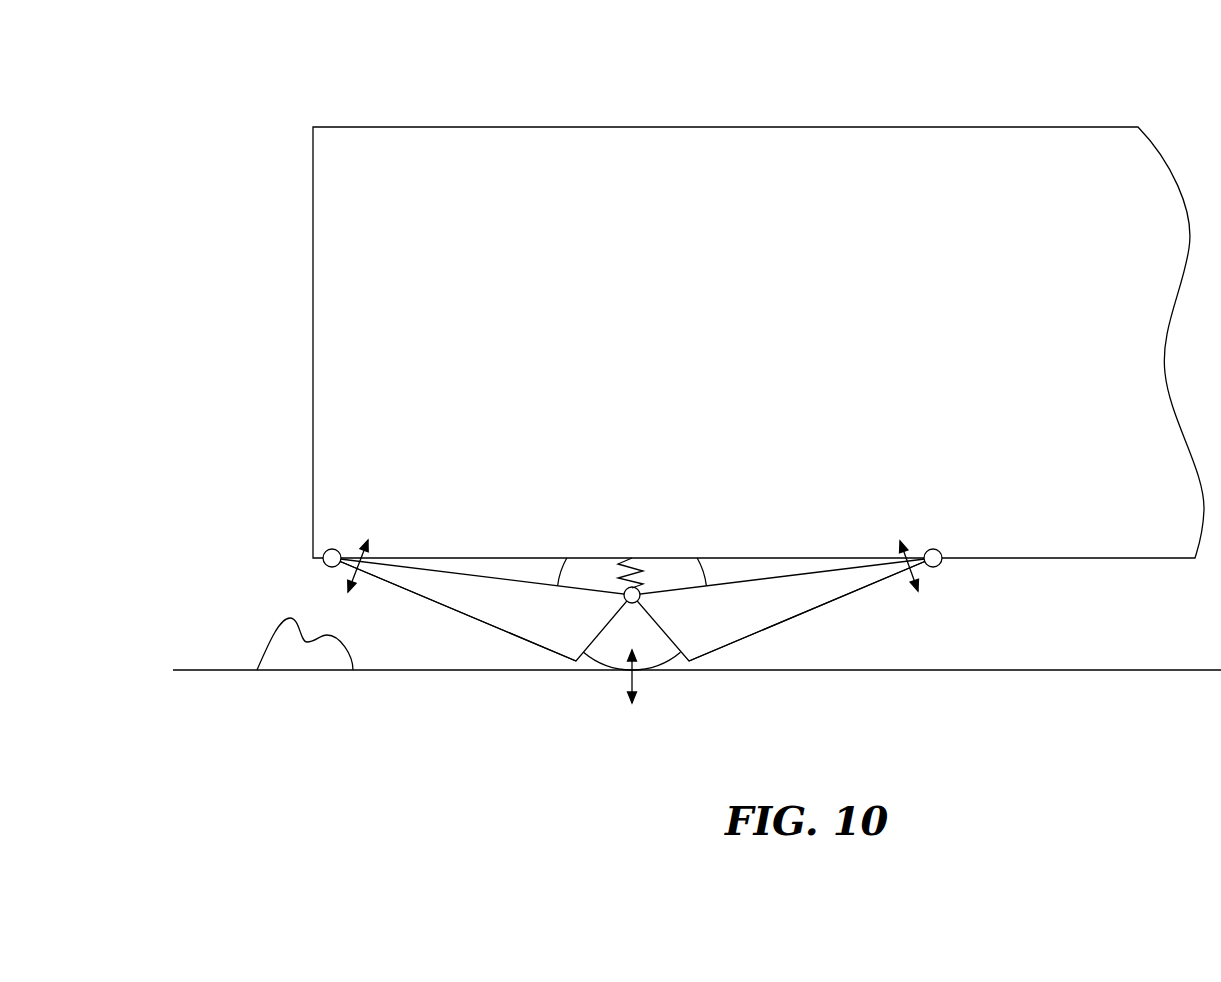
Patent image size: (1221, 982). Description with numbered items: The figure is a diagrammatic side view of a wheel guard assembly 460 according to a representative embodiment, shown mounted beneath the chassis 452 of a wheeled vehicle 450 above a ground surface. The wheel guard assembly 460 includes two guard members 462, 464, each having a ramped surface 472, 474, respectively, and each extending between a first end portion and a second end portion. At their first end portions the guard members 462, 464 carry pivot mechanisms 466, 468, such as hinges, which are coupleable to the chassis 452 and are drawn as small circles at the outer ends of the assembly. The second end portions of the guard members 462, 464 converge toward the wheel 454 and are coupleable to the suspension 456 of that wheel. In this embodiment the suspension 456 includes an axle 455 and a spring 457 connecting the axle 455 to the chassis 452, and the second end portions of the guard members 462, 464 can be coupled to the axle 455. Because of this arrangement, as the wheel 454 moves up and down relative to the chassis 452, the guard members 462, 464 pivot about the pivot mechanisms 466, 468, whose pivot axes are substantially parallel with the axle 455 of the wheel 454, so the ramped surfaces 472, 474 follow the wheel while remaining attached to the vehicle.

The wheeled vehicle 450 is at (397, 86).
The chassis 452 is at (688, 125).
The wheel 454 is at (657, 652).
The axle 455 is at (622, 588).
The suspension 456 is at (652, 570).
The spring 457 is at (631, 556).
The wheel guard assembly 460 is at (912, 683).
The guard member 462 is at (513, 610).
The guard member 464 is at (765, 602).
The pivot mechanism 466 is at (340, 551).
The pivot mechanism 468 is at (941, 552).
The ramped surface 472 is at (465, 613).
The ramped surface 474 is at (828, 603).